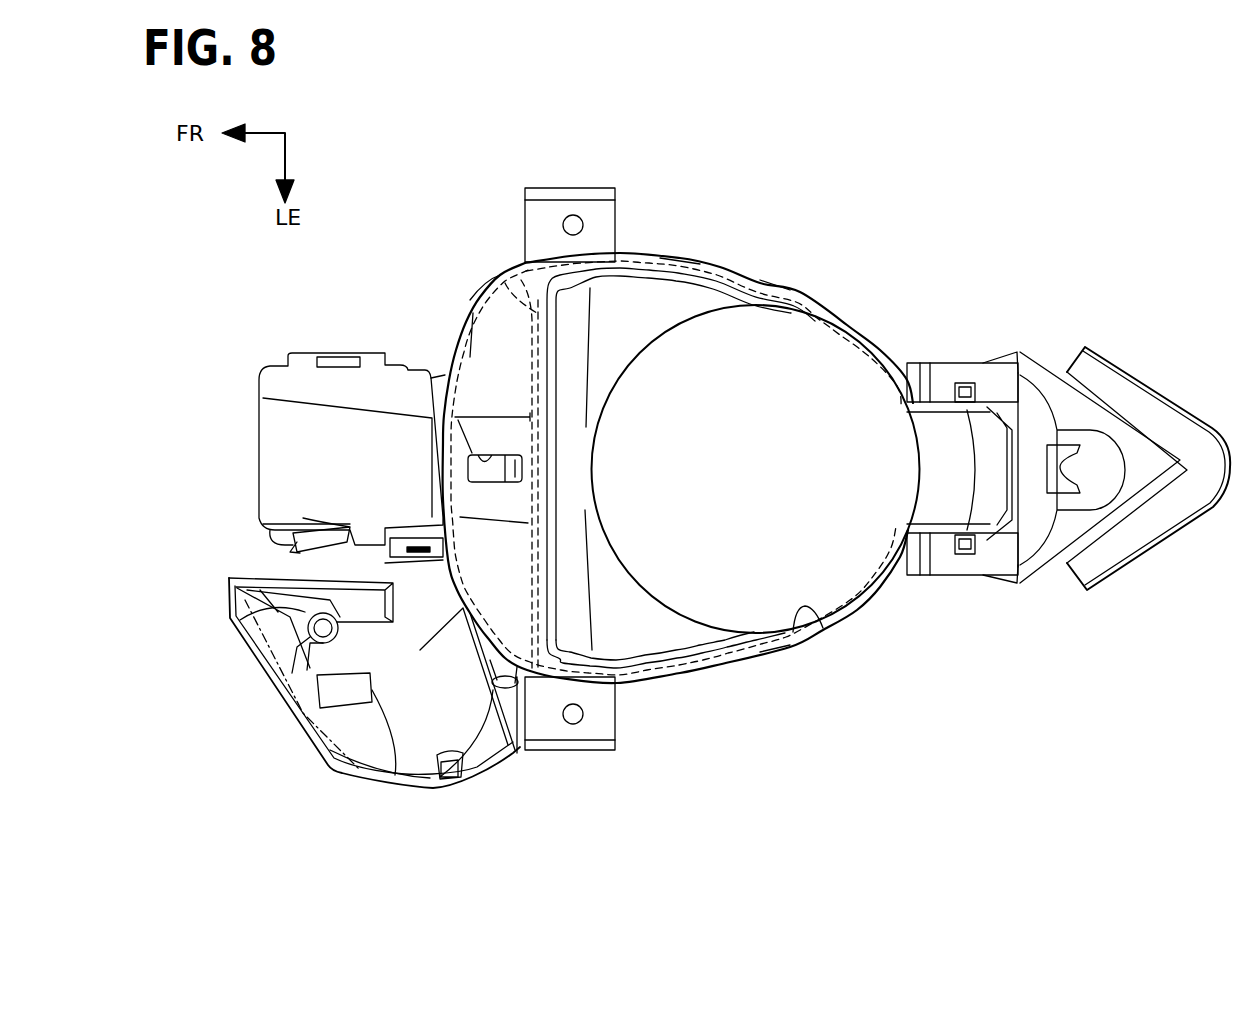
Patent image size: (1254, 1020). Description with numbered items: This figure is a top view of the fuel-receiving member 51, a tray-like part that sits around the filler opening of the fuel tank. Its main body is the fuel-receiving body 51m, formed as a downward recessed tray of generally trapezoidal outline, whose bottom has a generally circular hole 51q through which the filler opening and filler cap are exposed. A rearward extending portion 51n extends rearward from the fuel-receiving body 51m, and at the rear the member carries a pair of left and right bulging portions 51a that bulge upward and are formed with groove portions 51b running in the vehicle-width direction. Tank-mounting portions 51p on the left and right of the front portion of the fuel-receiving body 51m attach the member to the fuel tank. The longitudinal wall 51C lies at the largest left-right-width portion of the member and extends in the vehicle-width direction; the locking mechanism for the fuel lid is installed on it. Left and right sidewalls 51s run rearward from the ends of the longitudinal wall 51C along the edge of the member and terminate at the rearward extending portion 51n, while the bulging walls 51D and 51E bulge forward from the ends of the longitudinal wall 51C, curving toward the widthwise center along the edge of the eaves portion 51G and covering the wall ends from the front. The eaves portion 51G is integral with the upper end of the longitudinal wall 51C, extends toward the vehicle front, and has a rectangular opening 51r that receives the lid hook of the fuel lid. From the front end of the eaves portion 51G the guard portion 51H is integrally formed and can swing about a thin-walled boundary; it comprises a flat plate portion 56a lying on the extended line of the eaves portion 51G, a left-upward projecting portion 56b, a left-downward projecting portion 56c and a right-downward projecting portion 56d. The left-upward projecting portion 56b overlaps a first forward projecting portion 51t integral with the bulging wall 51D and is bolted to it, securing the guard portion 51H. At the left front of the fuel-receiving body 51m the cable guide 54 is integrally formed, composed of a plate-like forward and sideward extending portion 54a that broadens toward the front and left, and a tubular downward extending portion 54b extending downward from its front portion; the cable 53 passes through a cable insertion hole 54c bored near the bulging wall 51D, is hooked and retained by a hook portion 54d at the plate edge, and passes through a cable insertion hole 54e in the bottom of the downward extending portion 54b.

The fuel-receiving member 51 is at (455, 244).
The longitudinal wall 51C is at (521, 280).
The bulging wall 51E is at (477, 290).
The eaves portion 51G is at (473, 353).
The rectangular opening 51r is at (470, 452).
The fuel-receiving body 51m is at (690, 265).
The sidewall 51s is at (770, 272).
The circular hole 51q is at (818, 622).
The tank-mounting portion 51p is at (542, 200).
The bulging portion 51a is at (950, 385).
The groove portion 51b is at (962, 383).
The rearward extending portion 51n is at (1022, 358).
The guard portion 51H is at (268, 366).
The first forward projecting portion 51t is at (400, 553).
The bulging wall 51D is at (393, 567).
The flat plate portion 56a is at (268, 415).
The left-upward projecting portion 56b is at (303, 518).
The left-downward projecting portion 56c is at (297, 548).
The right-downward projecting portion 56d is at (340, 352).
The cable guide 54 is at (335, 777).
The forward and sideward extending portion 54a is at (415, 740).
The downward extending portion 54b is at (290, 620).
The cable insertion hole 54c is at (520, 755).
The hook portion 54d is at (452, 780).
The cable insertion hole 54e is at (300, 640).
The cable 53 is at (365, 790).